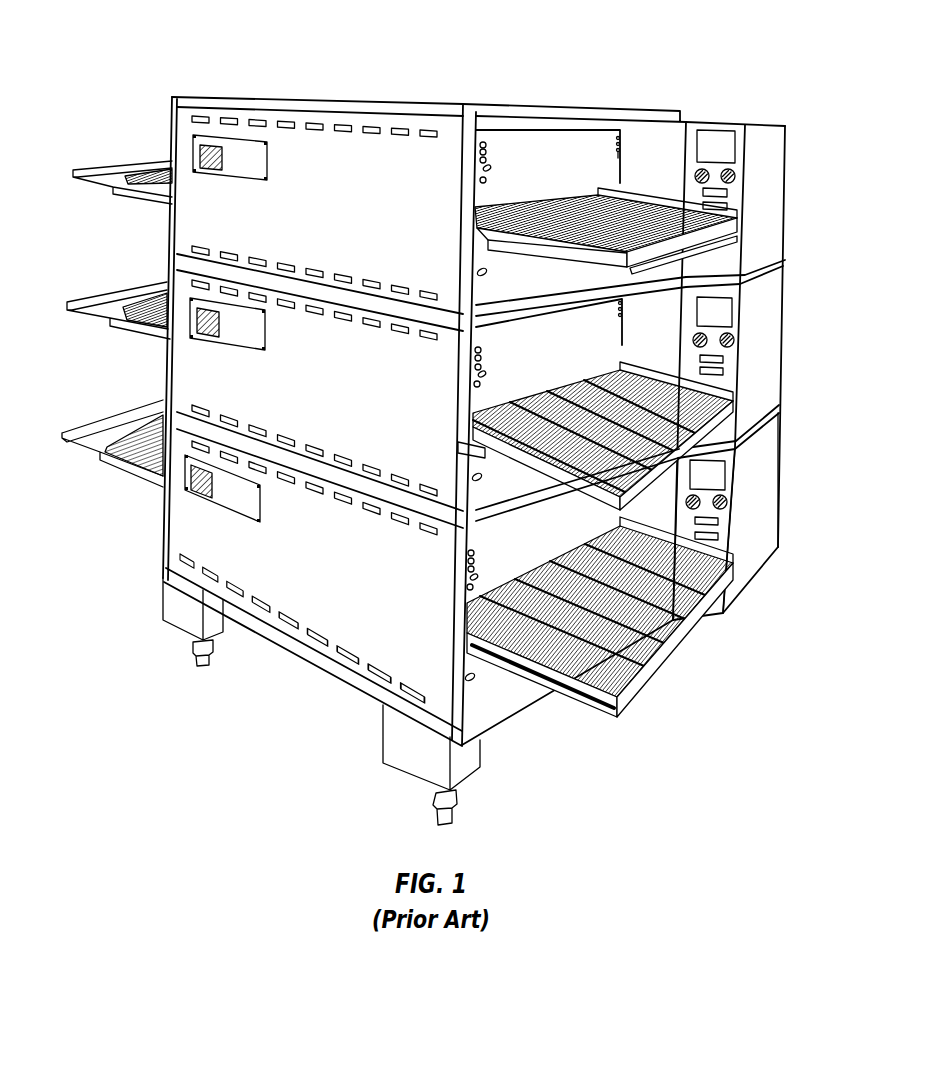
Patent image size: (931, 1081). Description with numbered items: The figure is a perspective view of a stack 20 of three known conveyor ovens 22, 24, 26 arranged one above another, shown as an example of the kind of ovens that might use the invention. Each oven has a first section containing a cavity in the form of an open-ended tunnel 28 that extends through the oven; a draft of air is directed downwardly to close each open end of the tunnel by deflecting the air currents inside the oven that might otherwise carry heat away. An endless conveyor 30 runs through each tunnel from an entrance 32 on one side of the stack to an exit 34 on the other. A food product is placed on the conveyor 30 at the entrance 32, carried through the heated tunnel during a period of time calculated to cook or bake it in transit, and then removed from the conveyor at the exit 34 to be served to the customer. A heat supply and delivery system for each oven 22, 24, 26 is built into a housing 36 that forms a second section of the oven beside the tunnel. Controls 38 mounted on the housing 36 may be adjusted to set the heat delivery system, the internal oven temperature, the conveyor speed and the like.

The stack 20 is at (174, 47).
The conveyor oven 22 is at (328, 222).
The conveyor oven 24 is at (328, 404).
The conveyor oven 26 is at (330, 577).
The open-ended tunnel 28 is at (620, 196).
The endless conveyor 30 is at (586, 716).
The entrance 32 is at (650, 690).
The exit 34 is at (90, 448).
The housing 36 is at (771, 517).
The controls 38 is at (716, 474).